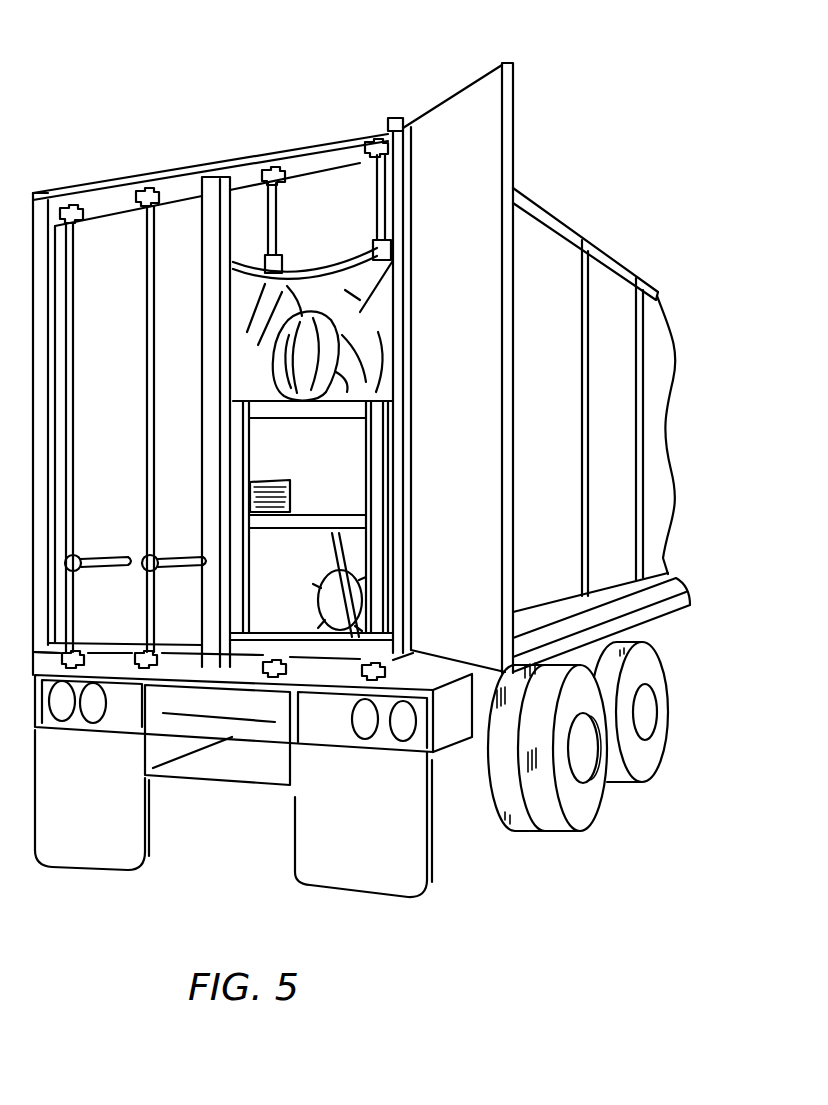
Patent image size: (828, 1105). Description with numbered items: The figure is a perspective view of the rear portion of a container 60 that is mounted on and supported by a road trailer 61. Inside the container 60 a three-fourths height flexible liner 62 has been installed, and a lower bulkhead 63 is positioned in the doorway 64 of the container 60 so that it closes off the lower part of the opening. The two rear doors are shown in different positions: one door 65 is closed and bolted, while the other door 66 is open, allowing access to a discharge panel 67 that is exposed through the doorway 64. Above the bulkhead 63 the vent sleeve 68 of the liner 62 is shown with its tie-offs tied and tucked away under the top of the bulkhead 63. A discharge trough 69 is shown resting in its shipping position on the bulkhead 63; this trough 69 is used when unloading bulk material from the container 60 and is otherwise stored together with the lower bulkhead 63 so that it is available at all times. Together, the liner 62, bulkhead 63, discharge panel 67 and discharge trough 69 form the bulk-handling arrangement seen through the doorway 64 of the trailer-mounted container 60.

The container 60 is at (637, 280).
The road trailer 61 is at (443, 737).
The three-fourths height liner 62 is at (321, 266).
The lower bulkhead 63 is at (289, 617).
The doorway 64 is at (404, 183).
The door 65 is at (99, 242).
The door 66 is at (492, 102).
The discharge panel 67 is at (321, 579).
The vent sleeve 68 is at (333, 330).
The discharge trough 69 is at (291, 493).